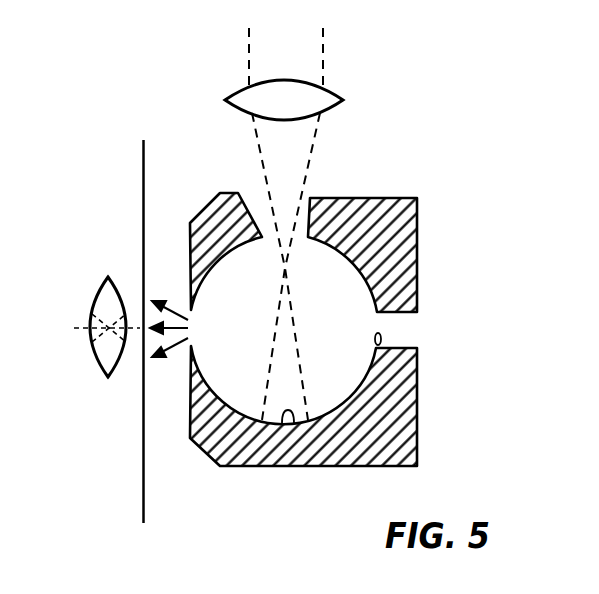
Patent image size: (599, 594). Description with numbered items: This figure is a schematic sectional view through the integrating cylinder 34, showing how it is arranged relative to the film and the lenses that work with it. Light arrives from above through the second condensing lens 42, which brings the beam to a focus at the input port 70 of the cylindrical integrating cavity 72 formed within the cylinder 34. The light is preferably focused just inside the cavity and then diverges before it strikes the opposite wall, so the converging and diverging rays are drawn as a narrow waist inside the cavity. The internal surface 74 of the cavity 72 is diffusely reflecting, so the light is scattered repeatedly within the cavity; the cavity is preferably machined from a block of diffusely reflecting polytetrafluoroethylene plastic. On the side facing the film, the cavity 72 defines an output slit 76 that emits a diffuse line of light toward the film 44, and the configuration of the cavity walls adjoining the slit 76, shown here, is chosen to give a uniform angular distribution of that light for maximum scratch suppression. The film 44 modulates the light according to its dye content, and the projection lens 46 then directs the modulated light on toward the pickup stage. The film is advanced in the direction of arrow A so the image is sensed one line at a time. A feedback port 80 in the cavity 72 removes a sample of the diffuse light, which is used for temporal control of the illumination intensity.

The integrating cylinder 34 is at (438, 168).
The second condensing lens 42 is at (340, 98).
The film 44 is at (145, 505).
The projection lens 46 is at (99, 292).
The input port 70 is at (310, 198).
The integrating cavity 72 is at (347, 300).
The internal surface 74 is at (290, 423).
The output slit 76 is at (190, 310).
The feedback port 80 is at (407, 332).
The direction of film advance A is at (119, 482).